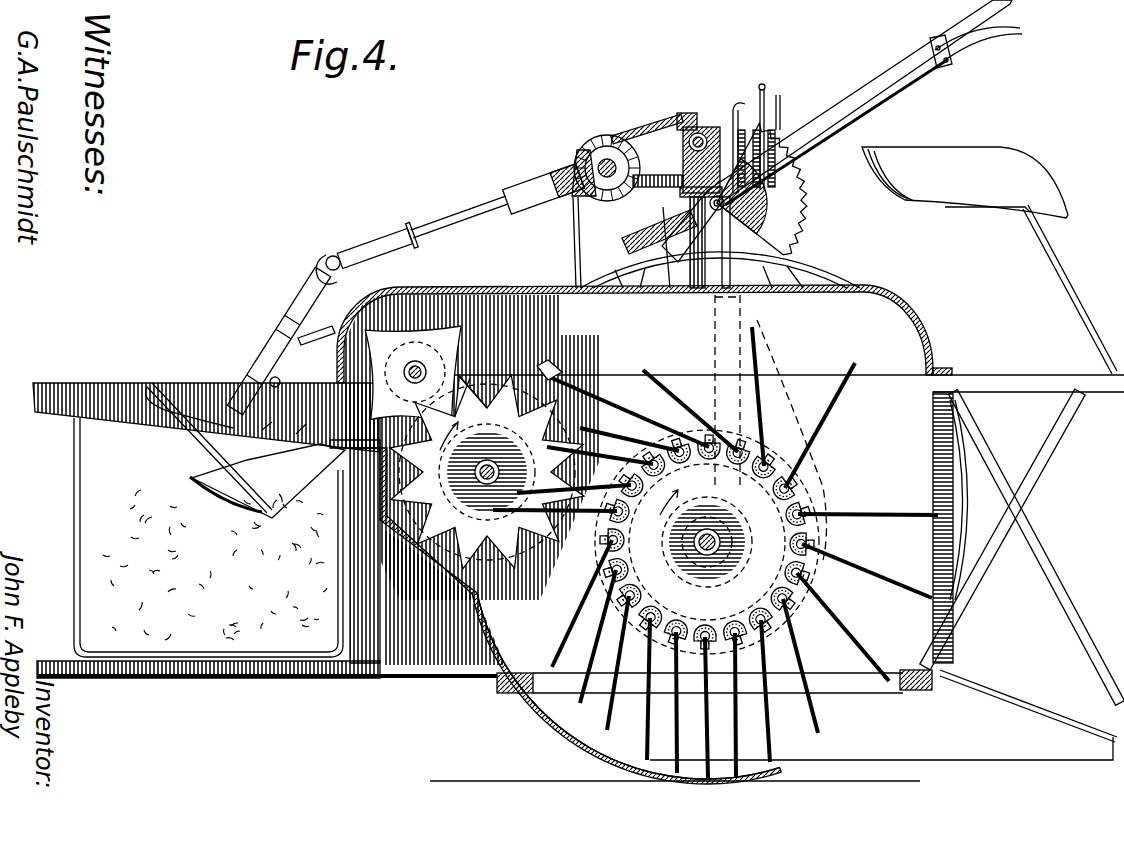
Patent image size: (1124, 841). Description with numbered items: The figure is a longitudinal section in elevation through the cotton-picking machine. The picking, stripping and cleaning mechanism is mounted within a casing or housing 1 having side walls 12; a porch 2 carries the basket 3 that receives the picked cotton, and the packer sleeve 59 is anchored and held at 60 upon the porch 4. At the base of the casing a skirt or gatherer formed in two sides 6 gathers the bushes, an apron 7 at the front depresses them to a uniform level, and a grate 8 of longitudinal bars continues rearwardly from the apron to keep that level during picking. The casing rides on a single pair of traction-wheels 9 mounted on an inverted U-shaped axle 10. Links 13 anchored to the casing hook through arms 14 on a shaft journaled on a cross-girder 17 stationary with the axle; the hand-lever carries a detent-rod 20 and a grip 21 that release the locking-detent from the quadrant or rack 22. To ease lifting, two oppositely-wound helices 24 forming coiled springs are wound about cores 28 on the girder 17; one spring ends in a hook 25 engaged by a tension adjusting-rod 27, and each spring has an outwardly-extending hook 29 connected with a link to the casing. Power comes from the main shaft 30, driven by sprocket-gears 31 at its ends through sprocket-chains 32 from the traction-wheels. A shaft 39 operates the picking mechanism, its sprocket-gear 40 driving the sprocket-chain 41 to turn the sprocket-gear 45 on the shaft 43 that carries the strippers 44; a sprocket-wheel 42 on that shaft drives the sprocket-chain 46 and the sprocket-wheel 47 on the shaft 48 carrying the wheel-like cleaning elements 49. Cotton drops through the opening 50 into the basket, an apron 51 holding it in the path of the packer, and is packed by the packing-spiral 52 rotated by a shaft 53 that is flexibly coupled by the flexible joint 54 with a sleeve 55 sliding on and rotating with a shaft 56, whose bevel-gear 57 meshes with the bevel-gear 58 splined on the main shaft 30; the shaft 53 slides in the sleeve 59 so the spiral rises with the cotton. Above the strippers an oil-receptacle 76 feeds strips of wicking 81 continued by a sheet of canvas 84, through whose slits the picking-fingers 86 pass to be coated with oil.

The casing or housing 1 is at (880, 320).
The porch 2 is at (228, 682).
The basket 3 is at (110, 670).
The porch 4 is at (33, 390).
The skirt or gatherer sides 6 is at (929, 748).
The apron 7 is at (1036, 490).
The grate 8 is at (885, 690).
The traction-wheels 9 is at (530, 722).
The U-shaped axle 10 is at (700, 128).
The side walls 12 is at (771, 427).
The links 13 is at (774, 426).
The arms 14 is at (659, 245).
The cross-girder 17 is at (688, 115).
The detent-rod 20 is at (925, 80).
The grip 21 is at (992, 28).
The locking quadrant or rack 22 is at (808, 212).
The helices 24 is at (765, 138).
The hook 25 is at (763, 86).
The tension adjusting-rod 27 is at (748, 100).
The cores 28 is at (728, 205).
The outwardly-extending hook 29 is at (772, 125).
The main shaft 30 is at (608, 160).
The sprocket-gears 31 is at (587, 150).
The sprocket-chains 32 is at (572, 250).
The shaft 39 is at (712, 556).
The sprocket-gear 40 is at (668, 592).
The sprocket-chain 41 is at (582, 603).
The sprocket-wheel 42 is at (488, 535).
The shaft 43 is at (487, 477).
The strippers 44 is at (415, 545).
The sprocket-gear 45 is at (487, 472).
The sprocket-chain 46 is at (470, 378).
The sprocket-wheel 47 is at (395, 395).
The shaft 48 is at (420, 358).
The cleaning elements 49 is at (470, 340).
The opening 50 is at (276, 418).
The apron 51 is at (309, 421).
The packing-spiral 52 is at (245, 500).
The shaft 53 is at (220, 392).
The flexible joint 54 is at (333, 256).
The sleeve 55 is at (393, 235).
The shaft 56 is at (455, 215).
The bevel-gear 57 is at (572, 178).
The bevel-gear 58 is at (640, 138).
The sleeve 59 is at (268, 352).
The anchorages 60 is at (325, 335).
The oil-receptacle 76 is at (555, 355).
The strips of wicking 81 is at (592, 372).
The sheet of canvas 84 is at (700, 435).
The picking-fingers 86 is at (487, 472).